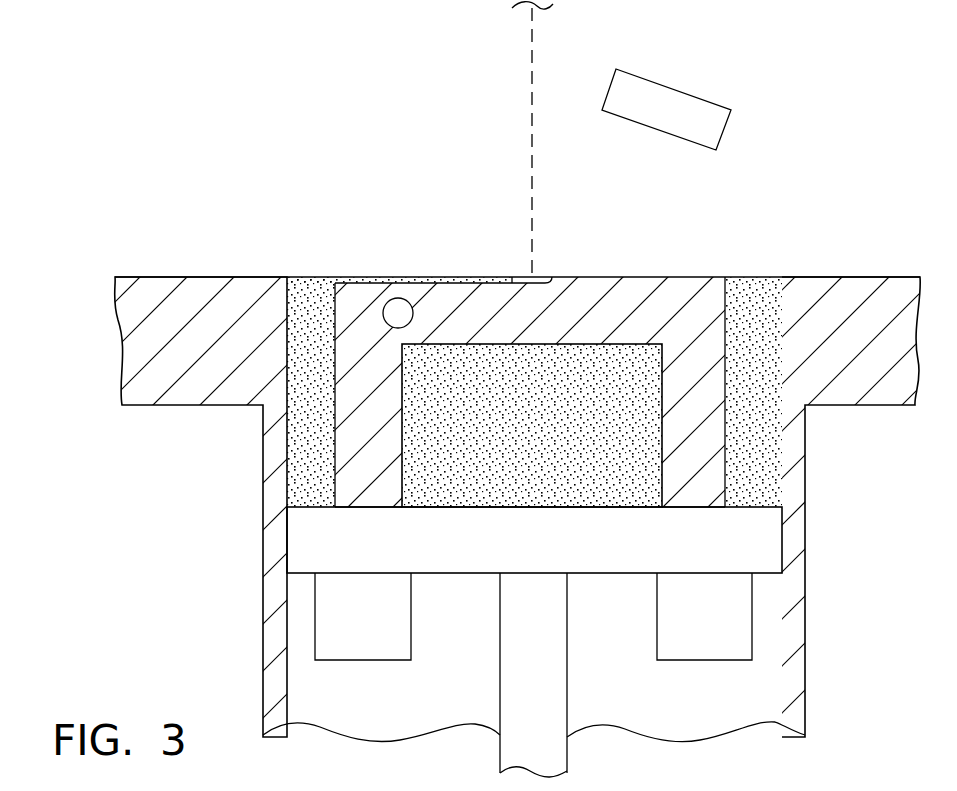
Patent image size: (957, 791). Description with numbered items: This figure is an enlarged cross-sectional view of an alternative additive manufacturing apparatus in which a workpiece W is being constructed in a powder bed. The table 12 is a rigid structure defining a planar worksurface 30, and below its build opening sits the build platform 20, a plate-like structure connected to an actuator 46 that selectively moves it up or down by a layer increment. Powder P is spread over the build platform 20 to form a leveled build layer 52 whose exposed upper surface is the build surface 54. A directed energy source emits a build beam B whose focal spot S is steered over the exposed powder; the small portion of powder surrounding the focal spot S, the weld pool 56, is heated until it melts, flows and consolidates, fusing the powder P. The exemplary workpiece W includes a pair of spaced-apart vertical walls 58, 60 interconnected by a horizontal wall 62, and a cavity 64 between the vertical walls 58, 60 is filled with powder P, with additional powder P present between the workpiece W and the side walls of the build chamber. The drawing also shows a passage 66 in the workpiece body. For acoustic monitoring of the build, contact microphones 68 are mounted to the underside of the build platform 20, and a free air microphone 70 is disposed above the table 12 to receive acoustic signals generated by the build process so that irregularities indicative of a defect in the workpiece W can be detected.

The table 12 is at (135, 343).
The worksurface 30 is at (133, 270).
The build surface 54 is at (305, 268).
The workpiece W is at (705, 272).
The build layer 52 is at (382, 277).
The horizontal wall 62 is at (617, 290).
The first vertical wall 58 is at (363, 450).
The second vertical wall 60 is at (710, 430).
The passage 66 is at (398, 313).
The weld pool 56 is at (522, 272).
The focal spot S is at (532, 277).
The cavity 64 is at (541, 362).
The powder P is at (321, 438).
The build platform 20 is at (537, 553).
The acoustic sensor 68 is at (361, 647).
The actuator 46 is at (538, 720).
The build beam B is at (531, 33).
The free air microphone 70 is at (700, 95).